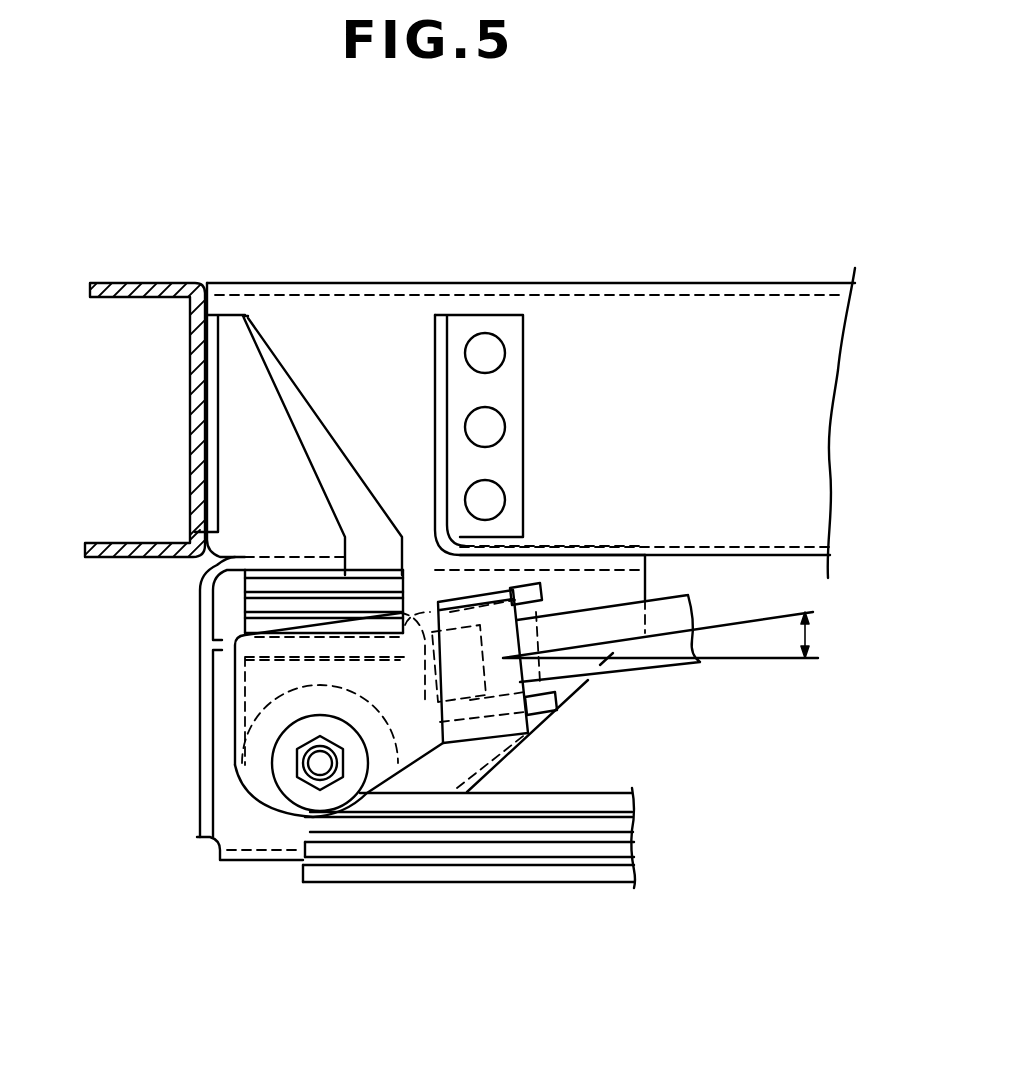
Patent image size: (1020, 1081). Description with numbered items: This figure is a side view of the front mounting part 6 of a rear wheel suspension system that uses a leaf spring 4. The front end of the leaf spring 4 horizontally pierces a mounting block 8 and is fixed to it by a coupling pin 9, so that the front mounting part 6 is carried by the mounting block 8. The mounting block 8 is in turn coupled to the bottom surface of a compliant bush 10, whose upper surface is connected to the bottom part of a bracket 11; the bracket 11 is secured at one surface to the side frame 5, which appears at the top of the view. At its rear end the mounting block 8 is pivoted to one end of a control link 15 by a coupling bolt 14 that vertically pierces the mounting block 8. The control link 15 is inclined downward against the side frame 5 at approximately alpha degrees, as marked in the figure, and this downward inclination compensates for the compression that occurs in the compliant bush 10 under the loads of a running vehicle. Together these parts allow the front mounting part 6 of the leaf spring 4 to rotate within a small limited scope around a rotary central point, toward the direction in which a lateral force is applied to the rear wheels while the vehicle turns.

The leaf spring 4 is at (512, 888).
The side frame 5 is at (668, 283).
The front mounting part 6 is at (207, 850).
The mounting block 8 is at (257, 755).
The coupling pin 9 is at (318, 770).
The compliant bush 10 is at (245, 610).
The bracket 11 is at (457, 405).
The coupling bolt 14 is at (492, 592).
The control link 15 is at (688, 598).